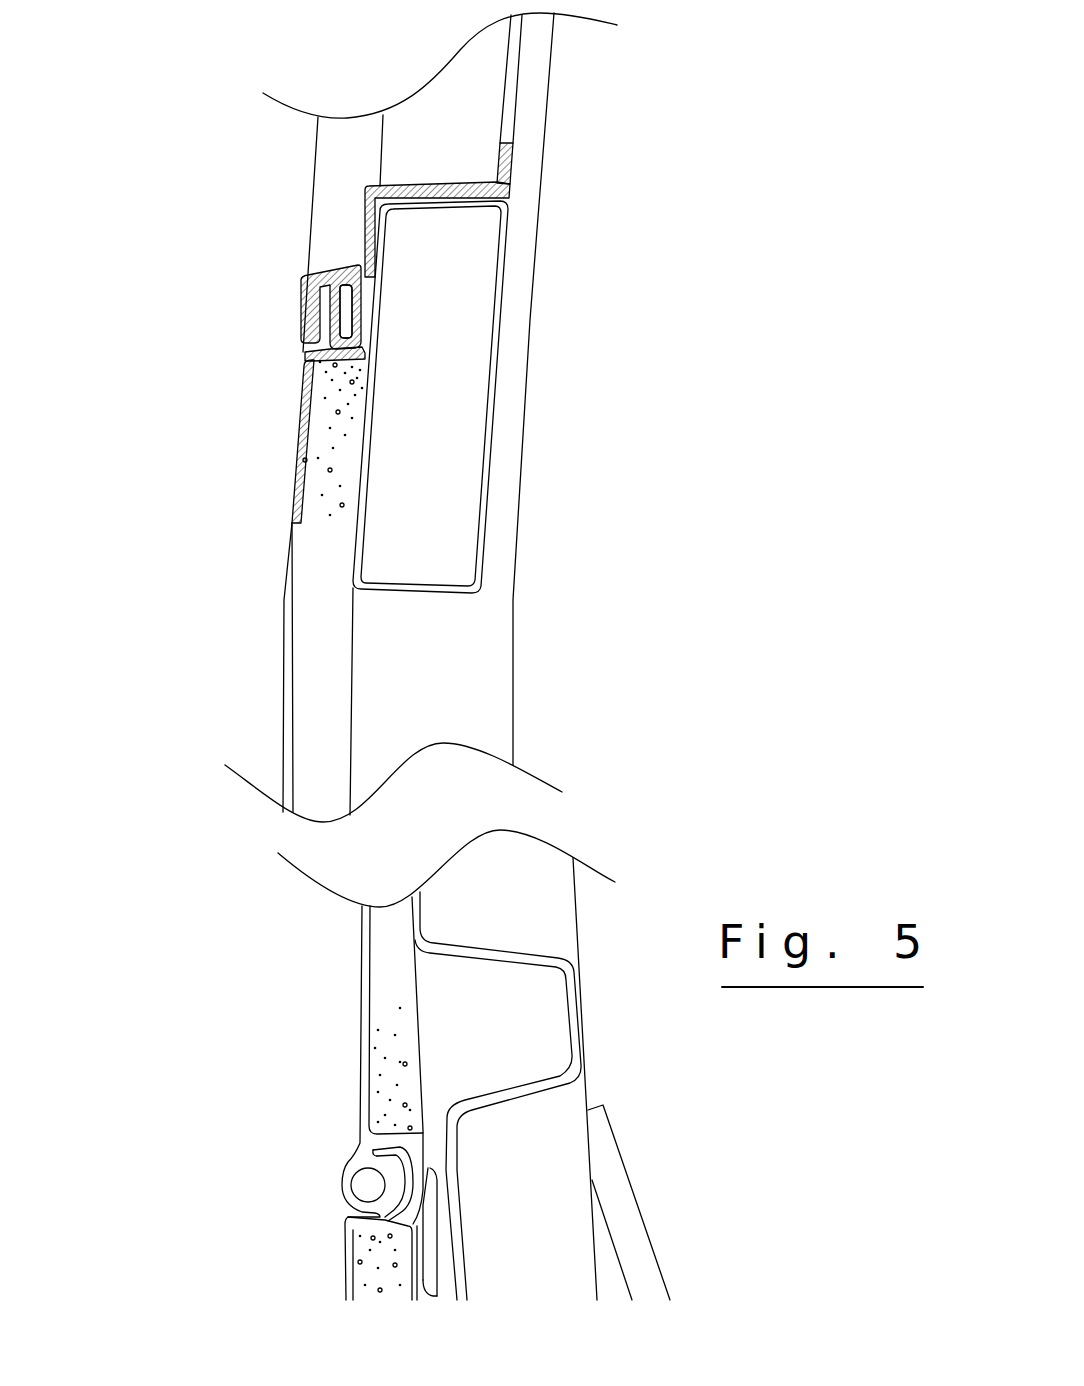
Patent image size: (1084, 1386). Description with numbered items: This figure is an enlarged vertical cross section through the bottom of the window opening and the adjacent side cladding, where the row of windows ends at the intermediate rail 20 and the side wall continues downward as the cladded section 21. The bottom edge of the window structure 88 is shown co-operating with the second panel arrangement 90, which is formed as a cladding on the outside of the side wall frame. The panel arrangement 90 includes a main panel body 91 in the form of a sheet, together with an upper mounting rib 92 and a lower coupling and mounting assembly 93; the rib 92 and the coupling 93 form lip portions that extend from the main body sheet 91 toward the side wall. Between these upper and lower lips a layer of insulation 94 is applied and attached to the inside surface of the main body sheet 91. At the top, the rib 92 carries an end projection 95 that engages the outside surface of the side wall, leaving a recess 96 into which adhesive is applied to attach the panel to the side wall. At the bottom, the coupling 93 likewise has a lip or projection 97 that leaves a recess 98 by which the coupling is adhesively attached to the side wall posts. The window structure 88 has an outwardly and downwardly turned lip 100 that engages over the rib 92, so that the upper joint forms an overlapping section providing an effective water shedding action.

The intermediate rail 20 is at (502, 297).
The cladded section 21 is at (237, 699).
The window structure 88 is at (527, 143).
The second panel arrangement 90 is at (288, 483).
The main panel body 91 is at (283, 650).
The upper mounting rib 92 is at (330, 347).
The lower coupling and mounting assembly 93 is at (340, 1163).
The layer of insulation 94 is at (348, 468).
The end projection 95 is at (375, 277).
The recess 96 is at (367, 322).
The lip or projection 97 is at (430, 1290).
The recess 98 is at (427, 1247).
The outwardly and downwardly turned lip 100 is at (305, 303).